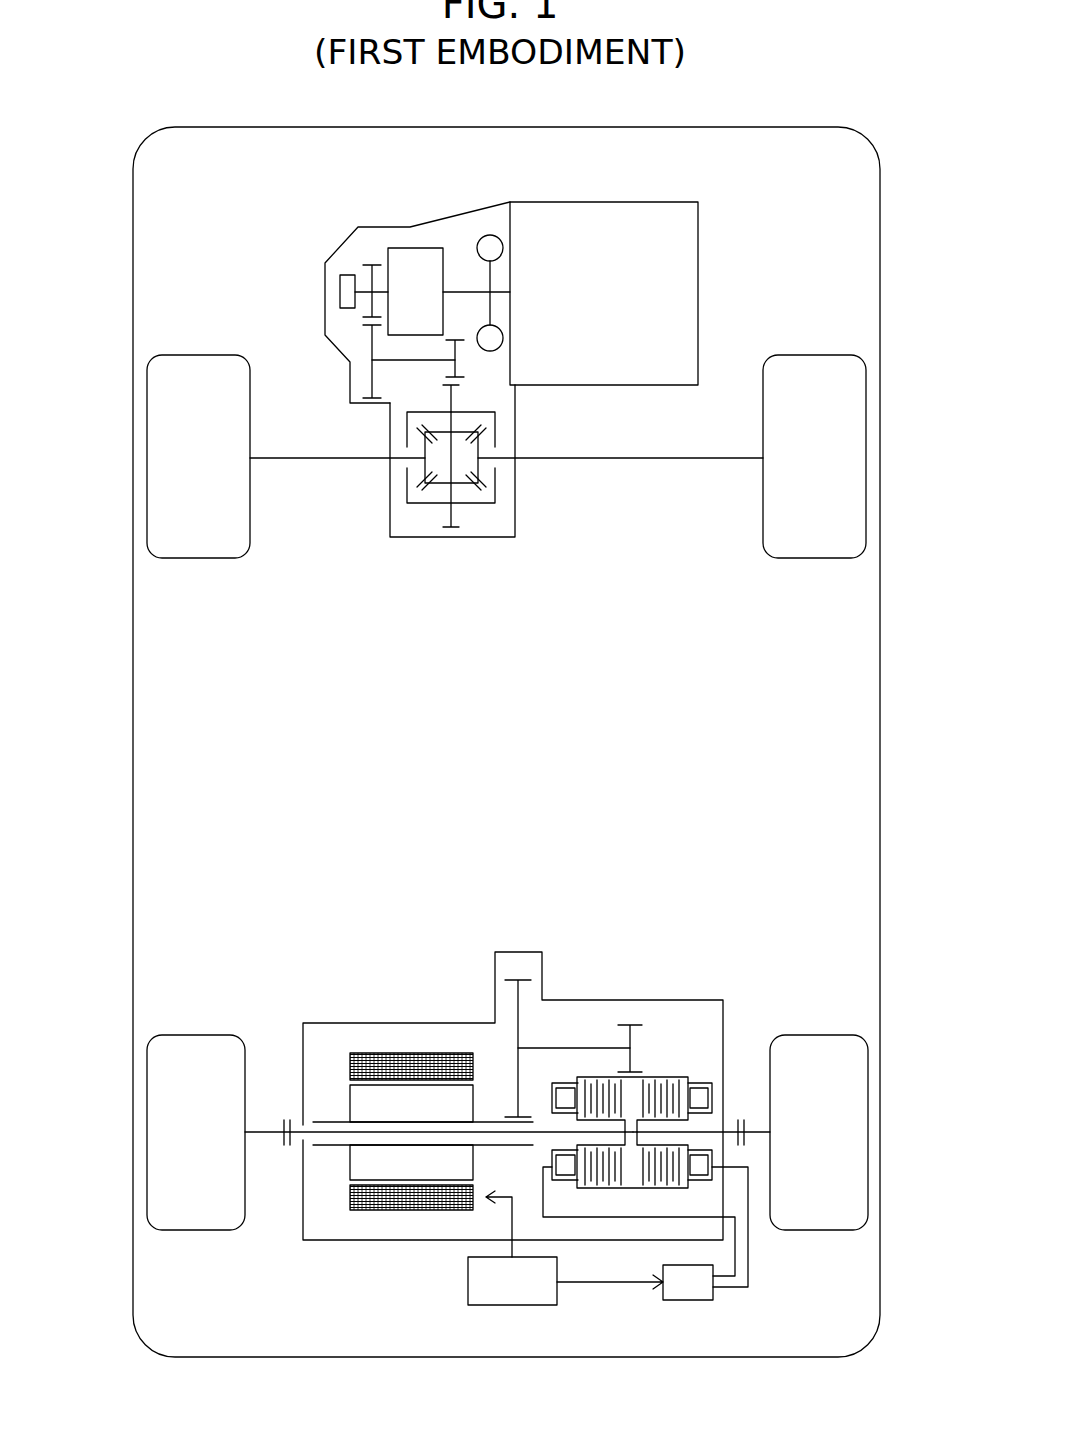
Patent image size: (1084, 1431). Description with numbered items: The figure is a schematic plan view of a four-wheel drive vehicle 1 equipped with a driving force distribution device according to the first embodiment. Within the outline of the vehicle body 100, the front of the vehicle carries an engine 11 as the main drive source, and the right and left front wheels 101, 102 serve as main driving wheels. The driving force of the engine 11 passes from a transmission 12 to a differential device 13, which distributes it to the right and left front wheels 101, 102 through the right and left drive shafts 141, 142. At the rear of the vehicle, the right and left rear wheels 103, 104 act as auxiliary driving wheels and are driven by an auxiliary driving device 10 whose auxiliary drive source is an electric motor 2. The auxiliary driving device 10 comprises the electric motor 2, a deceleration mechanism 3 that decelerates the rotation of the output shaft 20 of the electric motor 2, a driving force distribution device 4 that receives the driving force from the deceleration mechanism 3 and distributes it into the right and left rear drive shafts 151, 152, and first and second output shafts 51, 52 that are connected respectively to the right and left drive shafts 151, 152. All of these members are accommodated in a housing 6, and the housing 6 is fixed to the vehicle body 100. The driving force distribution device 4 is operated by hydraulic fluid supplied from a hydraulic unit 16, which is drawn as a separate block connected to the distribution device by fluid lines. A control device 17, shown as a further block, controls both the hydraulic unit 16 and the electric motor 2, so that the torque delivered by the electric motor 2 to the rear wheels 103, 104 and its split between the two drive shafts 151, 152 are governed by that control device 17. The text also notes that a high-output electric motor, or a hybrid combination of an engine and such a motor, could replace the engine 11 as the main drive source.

The four-wheel drive vehicle 1 is at (530, 705).
The vehicle body 100 is at (734, 127).
The engine 11 is at (640, 202).
The transmission 12 is at (389, 230).
The differential device 13 is at (411, 521).
The left drive shaft 141 is at (348, 457).
The right drive shaft 142 is at (625, 457).
The left front wheel 101 is at (147, 452).
The right front wheel 102 is at (866, 452).
The left rear wheel 103 is at (147, 1163).
The right rear wheel 104 is at (868, 1160).
The auxiliary driving device 10 is at (544, 1106).
The electric motor 2 is at (370, 1036).
The output shaft 20 is at (493, 1117).
The deceleration mechanism 3 is at (572, 1033).
The driving force distribution device 4 is at (690, 1052).
The first output shaft 51 is at (317, 1120).
The second output shaft 52 is at (712, 1132).
The housing 6 is at (388, 1240).
The left drive shaft 151 is at (273, 1135).
The right drive shaft 152 is at (752, 1135).
The hydraulic unit 16 is at (683, 1300).
The control device 17 is at (505, 1305).